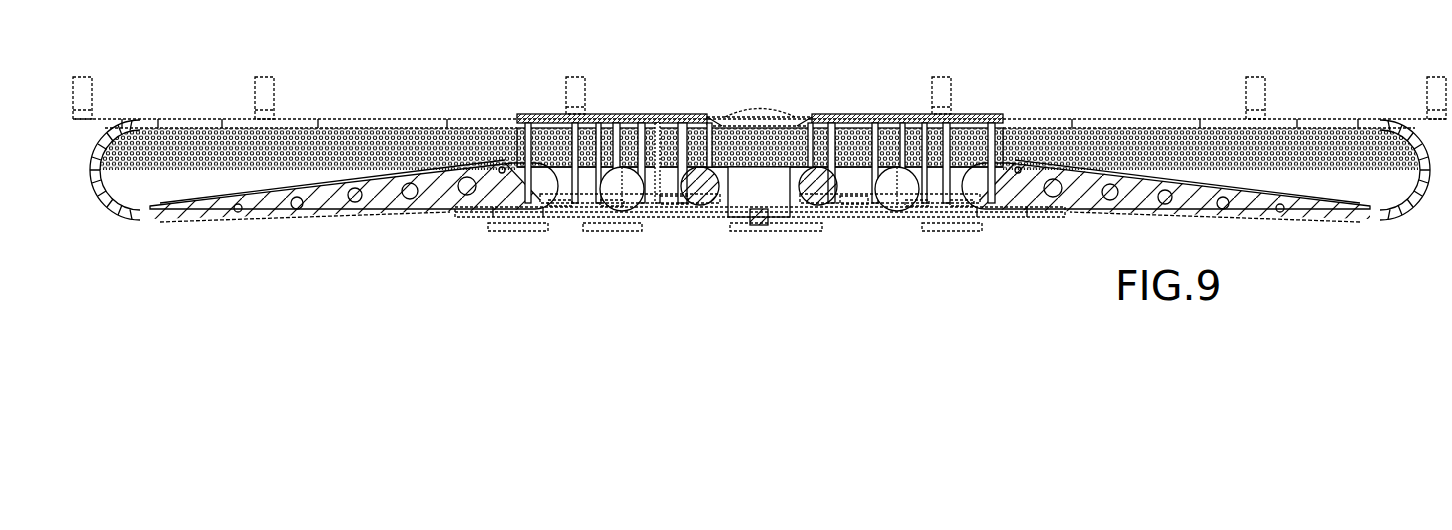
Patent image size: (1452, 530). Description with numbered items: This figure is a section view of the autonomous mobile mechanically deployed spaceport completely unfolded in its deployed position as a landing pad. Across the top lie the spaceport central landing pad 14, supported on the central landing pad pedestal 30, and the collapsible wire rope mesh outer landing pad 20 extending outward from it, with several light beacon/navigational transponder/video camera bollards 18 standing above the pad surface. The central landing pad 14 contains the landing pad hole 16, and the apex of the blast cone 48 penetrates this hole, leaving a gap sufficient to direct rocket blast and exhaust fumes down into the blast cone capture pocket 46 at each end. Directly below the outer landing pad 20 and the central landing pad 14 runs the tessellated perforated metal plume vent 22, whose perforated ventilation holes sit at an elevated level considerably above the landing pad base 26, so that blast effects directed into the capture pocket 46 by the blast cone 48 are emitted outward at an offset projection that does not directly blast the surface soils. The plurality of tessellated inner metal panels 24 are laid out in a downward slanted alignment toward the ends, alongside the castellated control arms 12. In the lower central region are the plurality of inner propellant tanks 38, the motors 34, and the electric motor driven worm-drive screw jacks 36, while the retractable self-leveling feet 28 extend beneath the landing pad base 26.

The castellated control arms 12 is at (275, 222).
The spaceport central landing pad 14 is at (632, 118).
The landing pad hole 16 is at (800, 120).
The light beacon/navigational transponder/video camera bollards 18 is at (1250, 90).
The collapsible wire rope mesh outer landing pad 20 is at (1165, 116).
The tessellated perforated metal plume vent 22 is at (410, 128).
The tessellated inner metal panels 24 is at (325, 218).
The landing pad base 26 is at (470, 217).
The retractable self-leveling feet 28 is at (752, 227).
The central landing pad pedestal 30 is at (978, 122).
The motors 34 is at (570, 217).
The electric motor driven worm-drive screw jacks 36 is at (630, 192).
The inner propellant tanks 38 is at (806, 182).
The blast cone capture pocket 46 is at (172, 193).
The blast cone 48 is at (732, 118).